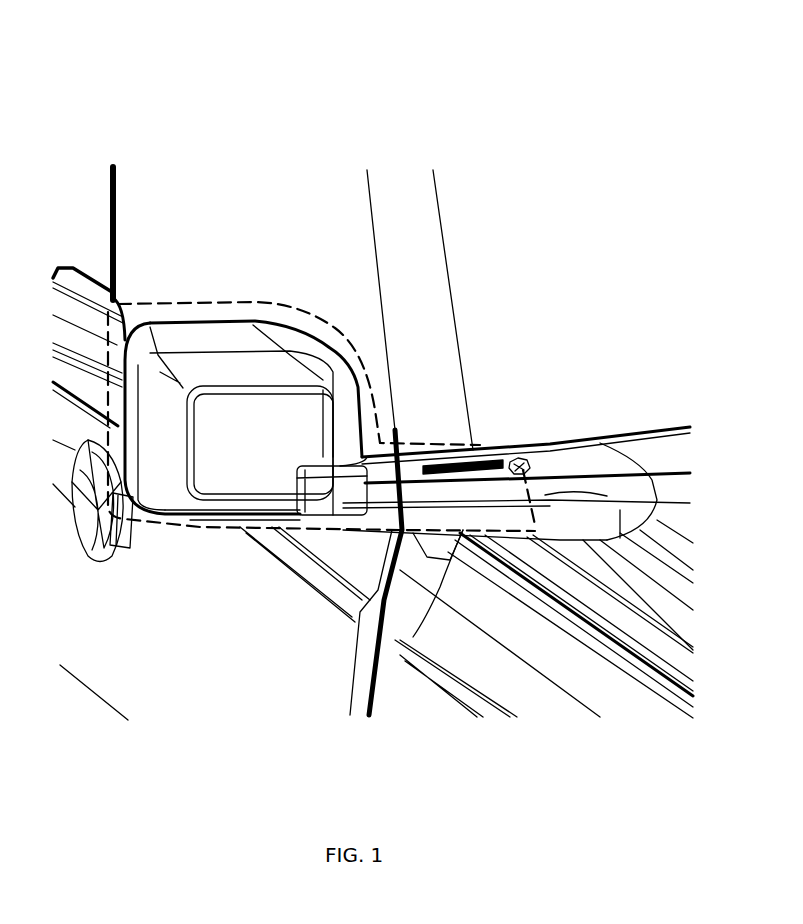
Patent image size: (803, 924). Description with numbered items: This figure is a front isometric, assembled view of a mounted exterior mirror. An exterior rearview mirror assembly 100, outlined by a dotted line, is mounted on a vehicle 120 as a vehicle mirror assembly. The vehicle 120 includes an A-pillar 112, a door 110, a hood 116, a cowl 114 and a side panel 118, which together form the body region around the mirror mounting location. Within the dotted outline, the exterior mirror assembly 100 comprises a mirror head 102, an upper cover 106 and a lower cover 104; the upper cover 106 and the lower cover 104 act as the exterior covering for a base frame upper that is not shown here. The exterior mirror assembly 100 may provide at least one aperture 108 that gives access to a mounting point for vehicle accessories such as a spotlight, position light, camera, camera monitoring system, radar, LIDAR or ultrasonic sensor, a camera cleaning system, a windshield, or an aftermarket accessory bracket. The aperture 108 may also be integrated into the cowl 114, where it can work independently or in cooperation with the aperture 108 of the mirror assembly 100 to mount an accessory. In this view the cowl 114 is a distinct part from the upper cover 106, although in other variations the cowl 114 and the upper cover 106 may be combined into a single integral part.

The exterior rearview mirror assembly 100 is at (205, 300).
The mirror head 102 is at (247, 445).
The lower cover 104 is at (392, 503).
The upper cover 106 is at (380, 477).
The aperture 108 is at (520, 458).
The door 110 is at (263, 642).
The A-pillar 112 is at (427, 230).
The cowl 114 is at (637, 452).
The hood 116 is at (667, 590).
The side panel 118 is at (437, 747).
The vehicle 120 is at (347, 205).